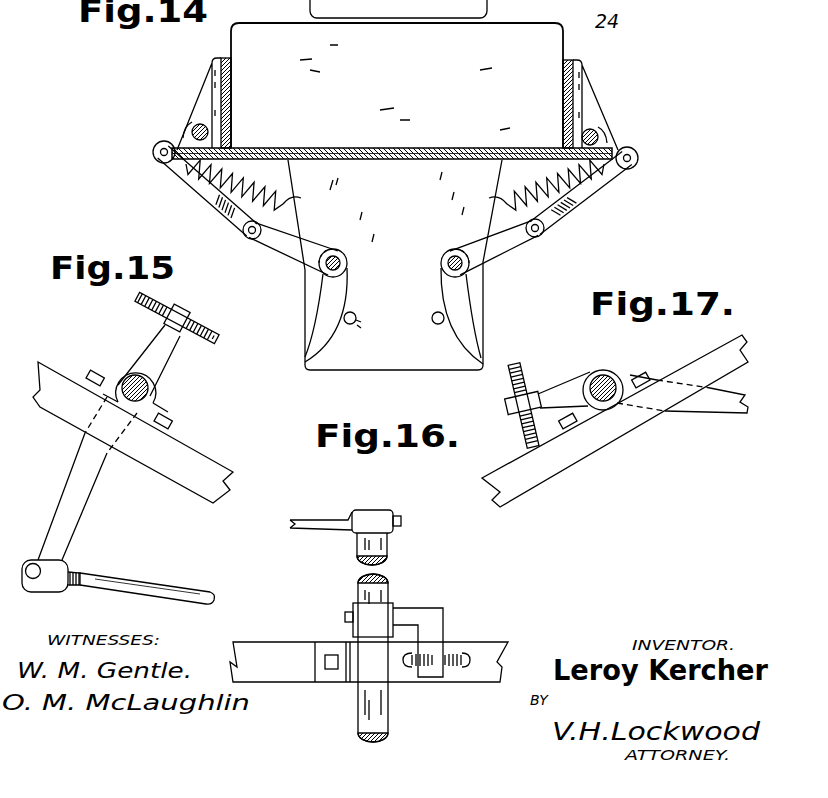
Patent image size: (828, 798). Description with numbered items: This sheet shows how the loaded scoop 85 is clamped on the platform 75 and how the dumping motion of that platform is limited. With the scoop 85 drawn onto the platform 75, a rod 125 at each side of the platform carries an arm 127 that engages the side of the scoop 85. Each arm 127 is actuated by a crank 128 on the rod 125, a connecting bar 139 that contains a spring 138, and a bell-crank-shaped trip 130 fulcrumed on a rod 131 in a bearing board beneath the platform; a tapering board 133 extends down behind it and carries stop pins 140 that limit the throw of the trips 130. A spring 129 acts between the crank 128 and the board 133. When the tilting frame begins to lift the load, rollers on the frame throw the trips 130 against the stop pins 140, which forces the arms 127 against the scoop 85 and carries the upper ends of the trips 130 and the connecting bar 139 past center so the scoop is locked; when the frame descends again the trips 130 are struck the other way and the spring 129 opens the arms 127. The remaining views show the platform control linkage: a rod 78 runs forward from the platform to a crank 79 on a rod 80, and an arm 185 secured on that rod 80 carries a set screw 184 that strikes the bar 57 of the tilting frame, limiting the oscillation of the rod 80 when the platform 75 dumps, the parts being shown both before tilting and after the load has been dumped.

In FIG. 15, the bar of the tilting frame 57 is at (197, 458).
In FIG. 16, the bar of the tilting frame 57 is at (273, 655).
In FIG. 17, the bar of the tilting frame 57 is at (578, 457).
In FIG. 14, the platform 75 is at (390, 160).
In FIG. 15, the rod 78 is at (138, 588).
In FIG. 15, the crank 79 is at (73, 480).
In FIG. 16, the crank 79 is at (327, 508).
In FIG. 17, the crank 79 is at (682, 394).
In FIG. 15, the rod 80 is at (140, 392).
In FIG. 16, the rod 80 is at (383, 583).
In FIG. 17, the rod 80 is at (605, 378).
In FIG. 14, the scoop 85 is at (397, 85).
In FIG. 14, the rod 125 is at (214, 137).
In FIG. 14, the arm 127 is at (212, 106).
In FIG. 14, the crank 128 is at (180, 143).
In FIG. 14, the spring 129 is at (260, 188).
In FIG. 14, the bell-crank-shaped trip 130 is at (277, 243).
In FIG. 14, the rod 131 is at (324, 272).
In FIG. 14, the board 133 is at (395, 265).
In FIG. 14, the spring 138 is at (228, 213).
In FIG. 14, the connecting bar 139 is at (203, 189).
In FIG. 14, the stop pin 140 is at (450, 353).
In FIG. 15, the set screw 184 is at (181, 330).
In FIG. 16, the set screw 184 is at (447, 653).
In FIG. 17, the set screw 184 is at (523, 428).
In FIG. 15, the arm 185 is at (157, 362).
In FIG. 16, the arm 185 is at (418, 613).
In FIG. 17, the arm 185 is at (560, 390).